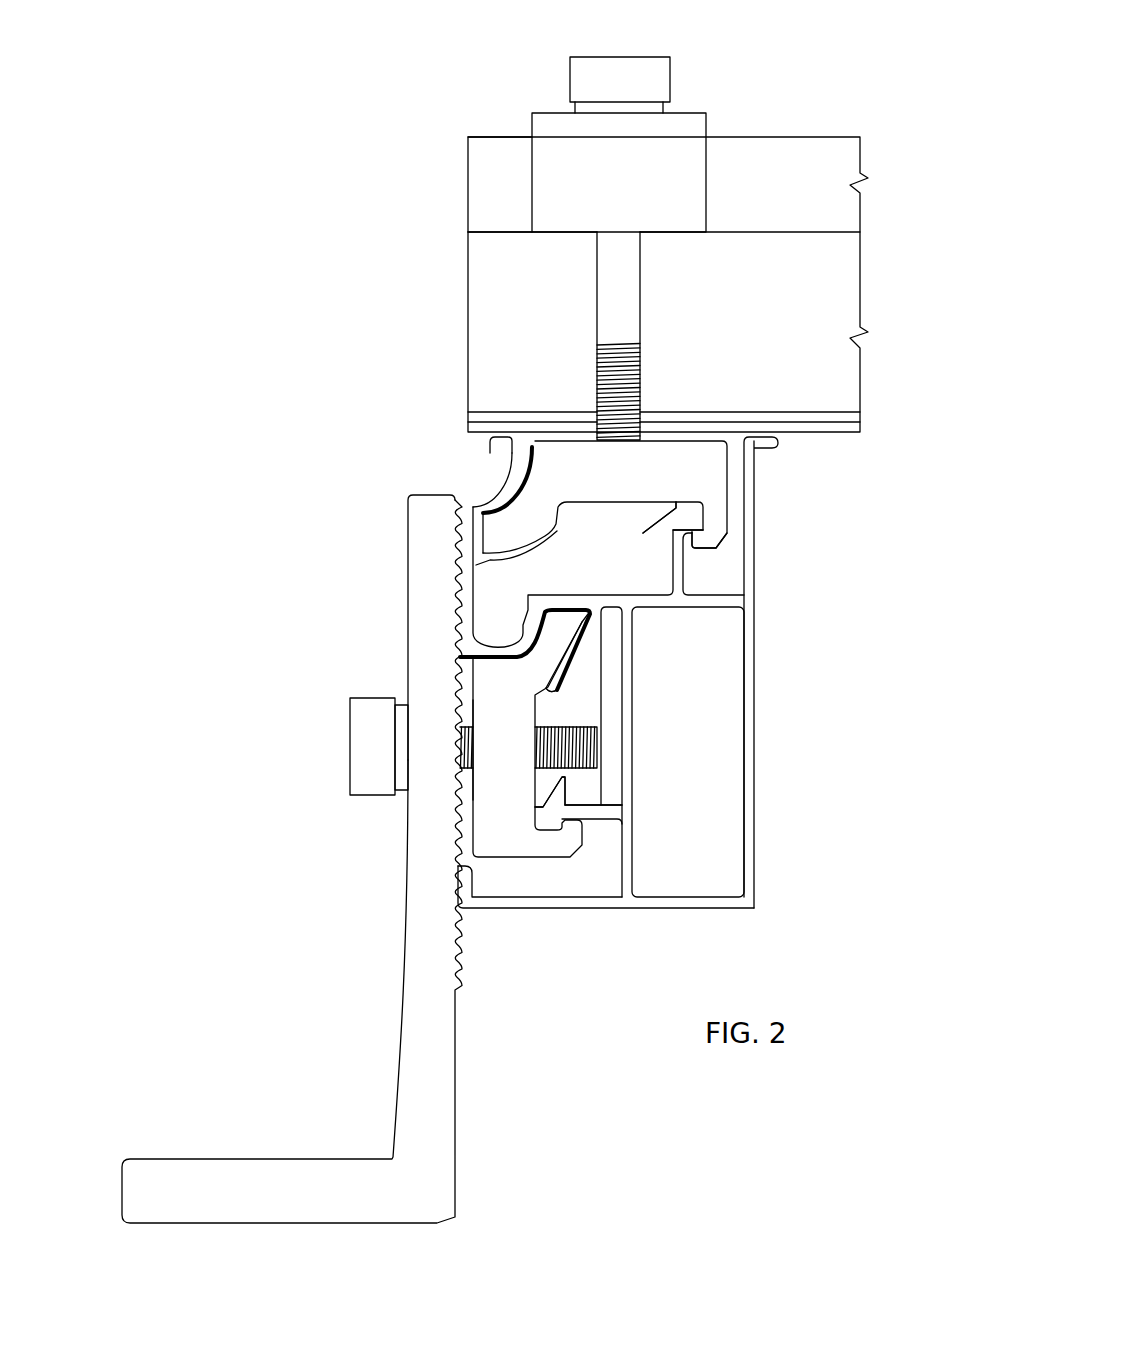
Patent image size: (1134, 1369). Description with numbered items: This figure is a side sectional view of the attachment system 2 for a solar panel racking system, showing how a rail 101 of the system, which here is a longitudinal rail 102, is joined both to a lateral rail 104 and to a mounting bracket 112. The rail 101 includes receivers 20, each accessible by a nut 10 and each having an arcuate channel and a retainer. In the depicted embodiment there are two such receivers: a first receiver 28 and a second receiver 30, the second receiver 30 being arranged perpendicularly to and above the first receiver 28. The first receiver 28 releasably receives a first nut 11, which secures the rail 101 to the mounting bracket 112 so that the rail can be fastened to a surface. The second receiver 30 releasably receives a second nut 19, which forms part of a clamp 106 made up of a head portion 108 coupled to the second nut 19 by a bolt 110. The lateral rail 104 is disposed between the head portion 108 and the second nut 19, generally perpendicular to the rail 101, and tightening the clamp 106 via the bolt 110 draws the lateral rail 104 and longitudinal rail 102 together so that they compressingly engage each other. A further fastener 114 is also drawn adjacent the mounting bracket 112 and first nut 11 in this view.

The attachment system 2 is at (386, 280).
The lateral rail 104 is at (767, 295).
The clamp 106 is at (567, 171).
The head portion 108 is at (690, 155).
The bolt 110 is at (657, 80).
The nut 10 is at (700, 473).
The second nut 19 is at (612, 470).
The second receiver 30 is at (735, 522).
The receiver 20 is at (573, 513).
The first receiver 28 is at (537, 700).
The first nut 11 is at (500, 745).
The bolt 114 is at (372, 737).
The longitudinal rail 102 is at (747, 808).
The rail 101 is at (747, 855).
The mounting bracket 112 is at (437, 1087).